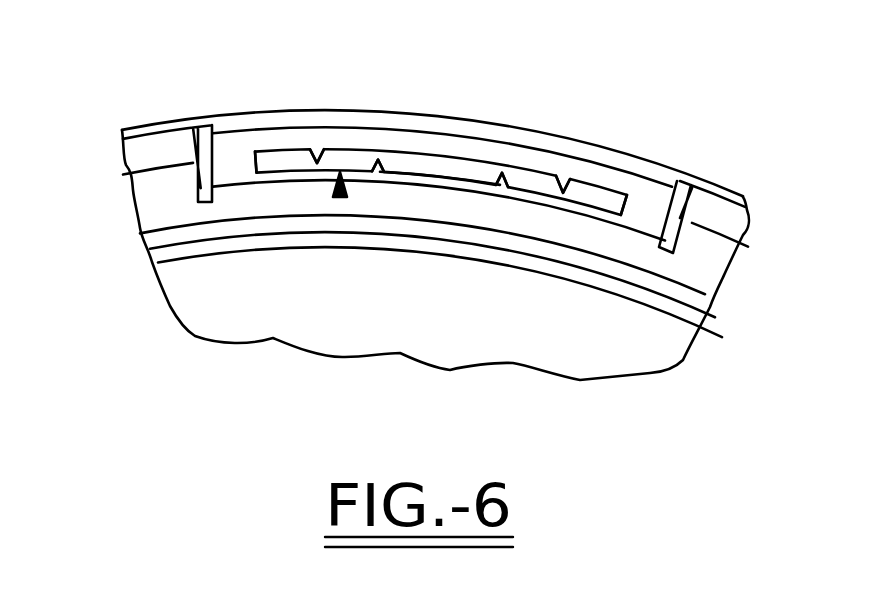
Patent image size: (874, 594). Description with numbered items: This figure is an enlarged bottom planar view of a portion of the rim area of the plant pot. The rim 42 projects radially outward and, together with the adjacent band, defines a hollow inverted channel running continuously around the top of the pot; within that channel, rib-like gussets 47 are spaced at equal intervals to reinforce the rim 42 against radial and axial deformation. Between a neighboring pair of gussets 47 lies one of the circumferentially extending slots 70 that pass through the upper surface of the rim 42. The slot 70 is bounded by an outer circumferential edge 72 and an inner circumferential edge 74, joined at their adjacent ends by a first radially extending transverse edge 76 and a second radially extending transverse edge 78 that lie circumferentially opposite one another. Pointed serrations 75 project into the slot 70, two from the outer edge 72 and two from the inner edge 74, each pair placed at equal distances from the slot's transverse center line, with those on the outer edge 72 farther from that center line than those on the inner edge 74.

The rim 42 is at (143, 128).
The gussets 47 is at (751, 238).
The outer circumferential edge 72 is at (437, 153).
The pointed serrations 75 is at (503, 187).
The first radially extending, transverse edge 76 is at (258, 155).
The second radially extending, transverse edge 78 is at (628, 204).
The inner circumferential edge 74 is at (465, 182).
The slots 70 is at (339, 198).